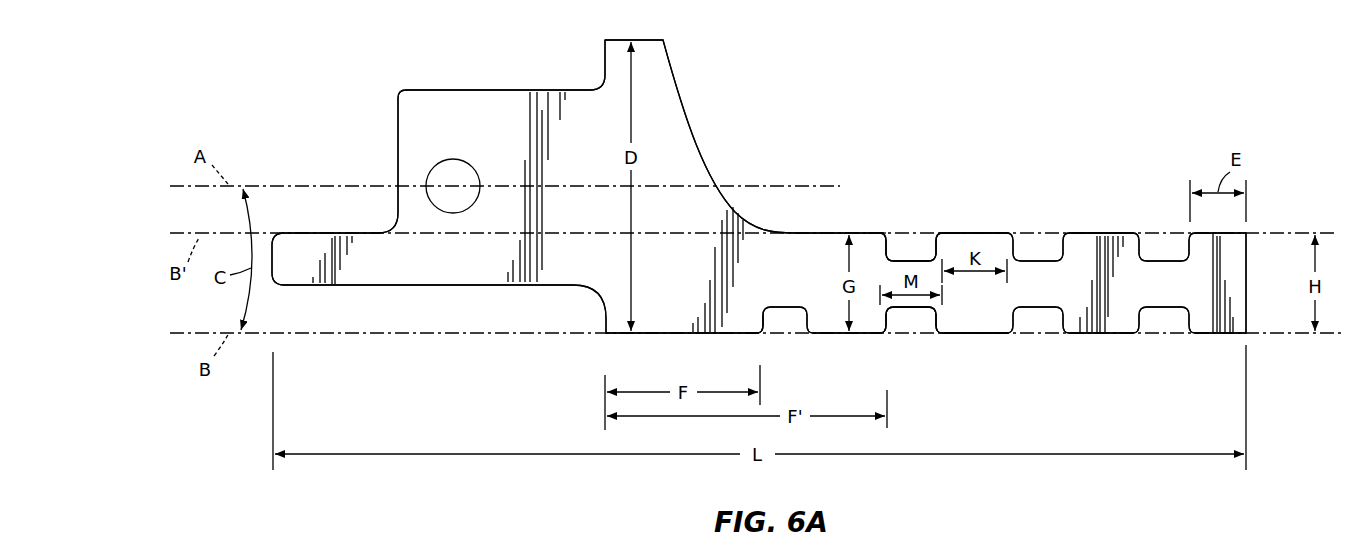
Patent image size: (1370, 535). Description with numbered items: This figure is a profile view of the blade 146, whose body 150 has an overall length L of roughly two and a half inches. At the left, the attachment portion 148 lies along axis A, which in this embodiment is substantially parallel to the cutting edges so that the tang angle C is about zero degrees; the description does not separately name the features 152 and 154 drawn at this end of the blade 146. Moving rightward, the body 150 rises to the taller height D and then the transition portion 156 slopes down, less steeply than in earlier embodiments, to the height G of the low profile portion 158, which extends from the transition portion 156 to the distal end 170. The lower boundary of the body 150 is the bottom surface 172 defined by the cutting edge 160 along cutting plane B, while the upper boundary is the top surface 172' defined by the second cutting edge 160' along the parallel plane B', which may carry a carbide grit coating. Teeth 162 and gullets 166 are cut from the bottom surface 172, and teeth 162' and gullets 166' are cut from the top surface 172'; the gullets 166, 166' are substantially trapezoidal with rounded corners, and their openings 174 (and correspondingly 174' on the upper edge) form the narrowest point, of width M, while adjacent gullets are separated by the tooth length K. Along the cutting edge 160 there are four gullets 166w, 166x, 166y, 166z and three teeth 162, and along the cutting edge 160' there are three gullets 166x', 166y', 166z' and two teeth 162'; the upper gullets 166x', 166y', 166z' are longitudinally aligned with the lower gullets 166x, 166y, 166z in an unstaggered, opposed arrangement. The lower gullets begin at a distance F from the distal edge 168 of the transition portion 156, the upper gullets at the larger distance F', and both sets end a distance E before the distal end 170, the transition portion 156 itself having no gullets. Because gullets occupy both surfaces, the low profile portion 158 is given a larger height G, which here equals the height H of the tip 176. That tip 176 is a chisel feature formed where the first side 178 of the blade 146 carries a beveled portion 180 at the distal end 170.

The blade 146 is at (1020, 66).
The attachment portion 148 is at (528, 89).
The body 150 is at (414, 114).
The forward end 152 is at (294, 250).
The pivot hole 154 is at (458, 166).
The transition portion 156 is at (653, 53).
The low profile portion 158 is at (1200, 293).
The cutting edge 160 is at (993, 376).
The second cutting edge 160' is at (994, 187).
The teeth 162 is at (973, 378).
The teeth 162' is at (1037, 256).
The gullets 166 is at (916, 355).
The gullets 166' is at (921, 191).
The gullet 166w is at (781, 318).
The gullet 166x is at (919, 345).
The gullet 166x' is at (926, 202).
The gullet 166y is at (1038, 345).
The gullet 166y' is at (1044, 214).
The gullet 166z is at (1164, 345).
The gullet 166z' is at (1159, 207).
The distal edge 168 is at (601, 326).
The distal end 170 is at (1247, 288).
The bottom surface 172 is at (647, 355).
The top surface 172' is at (786, 228).
The openings 174 is at (727, 345).
The upper leading edge 174' is at (888, 187).
The tip 176 is at (1236, 234).
The first side 178 is at (1106, 136).
The beveled portion 180 is at (1237, 327).